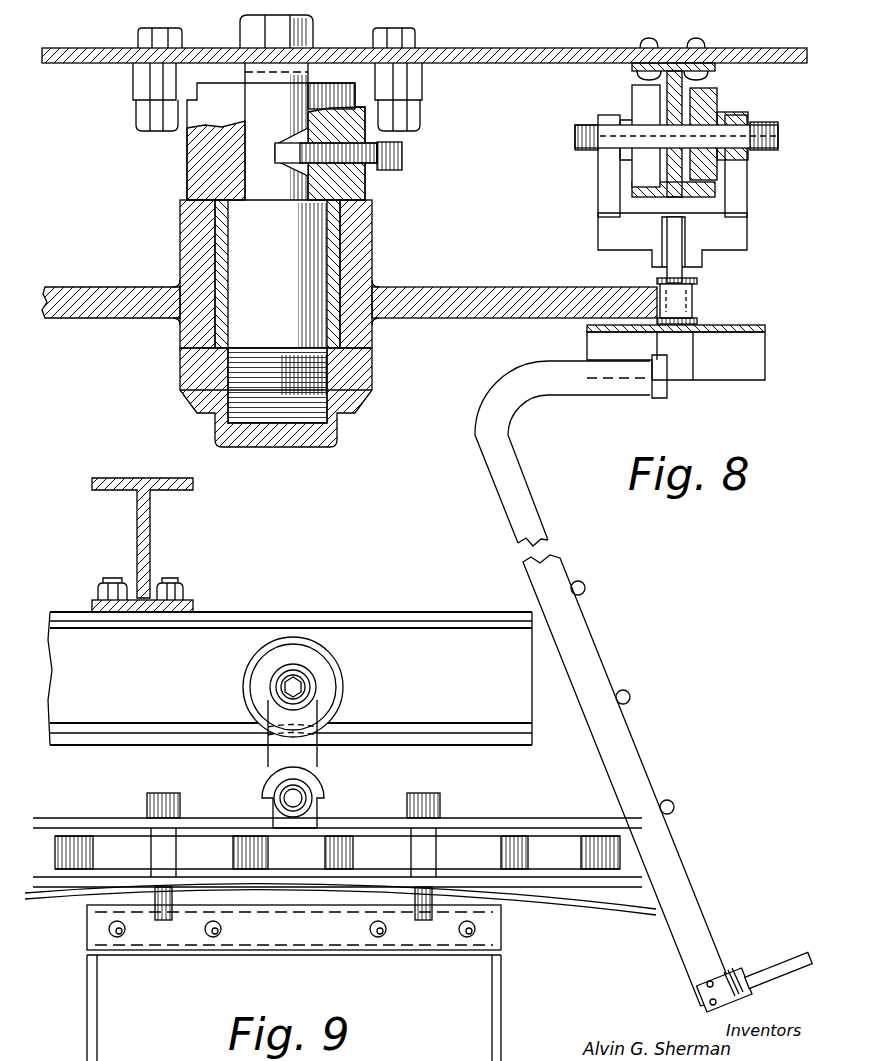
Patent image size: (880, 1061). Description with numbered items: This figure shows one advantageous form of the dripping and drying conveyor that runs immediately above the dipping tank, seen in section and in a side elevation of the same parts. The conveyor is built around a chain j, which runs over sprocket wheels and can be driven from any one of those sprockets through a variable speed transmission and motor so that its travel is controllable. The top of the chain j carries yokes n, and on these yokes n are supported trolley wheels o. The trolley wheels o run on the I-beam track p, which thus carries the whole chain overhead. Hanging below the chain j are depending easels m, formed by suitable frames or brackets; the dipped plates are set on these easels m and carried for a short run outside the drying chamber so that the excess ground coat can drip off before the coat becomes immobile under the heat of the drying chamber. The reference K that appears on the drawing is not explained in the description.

In FIG. 8, the I-beam track p is at (680, 47).
In FIG. 9, the I-beam track p is at (418, 637).
In FIG. 8, the trolley wheels o is at (632, 97).
In FIG. 9, the trolley wheels o is at (352, 684).
In FIG. 8, the yokes n is at (605, 226).
In FIG. 9, the yokes n is at (268, 760).
In FIG. 8, the flange plate K is at (458, 290).
In FIG. 8, the chain j is at (700, 283).
In FIG. 9, the chain j is at (475, 832).
In FIG. 8, the easels m is at (478, 466).
In FIG. 9, the easels m is at (500, 980).